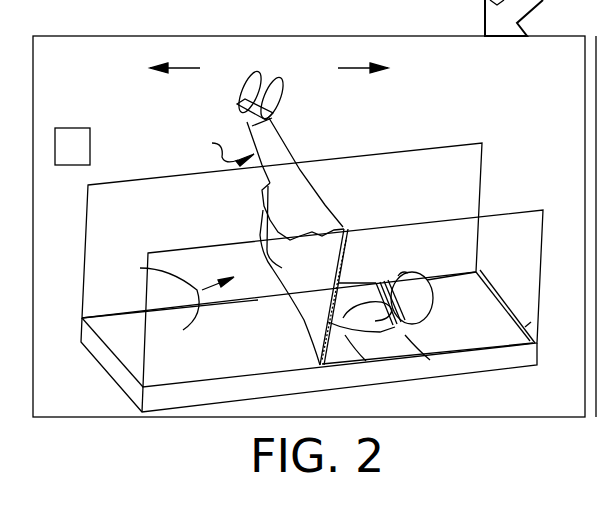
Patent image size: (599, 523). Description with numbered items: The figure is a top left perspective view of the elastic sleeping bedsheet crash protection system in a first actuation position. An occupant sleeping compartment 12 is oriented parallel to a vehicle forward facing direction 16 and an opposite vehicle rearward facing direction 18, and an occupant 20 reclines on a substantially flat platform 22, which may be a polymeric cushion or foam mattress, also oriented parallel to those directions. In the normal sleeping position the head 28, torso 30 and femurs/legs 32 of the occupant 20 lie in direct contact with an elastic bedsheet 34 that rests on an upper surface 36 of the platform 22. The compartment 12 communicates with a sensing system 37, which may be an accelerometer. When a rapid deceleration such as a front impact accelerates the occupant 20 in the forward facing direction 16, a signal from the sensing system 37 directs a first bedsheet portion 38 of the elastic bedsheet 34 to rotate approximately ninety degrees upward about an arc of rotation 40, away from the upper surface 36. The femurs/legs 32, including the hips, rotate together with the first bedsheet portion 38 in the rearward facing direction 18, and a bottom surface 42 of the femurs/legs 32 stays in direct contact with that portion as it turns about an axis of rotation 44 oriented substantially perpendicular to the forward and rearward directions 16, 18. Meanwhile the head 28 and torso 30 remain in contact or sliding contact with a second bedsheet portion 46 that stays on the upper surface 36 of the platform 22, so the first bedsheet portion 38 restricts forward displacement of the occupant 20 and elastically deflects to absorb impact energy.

The occupant sleeping compartment 12 is at (436, 116).
The vehicle forward facing direction 16 is at (185, 68).
The vehicle rearward facing direction 18 is at (348, 68).
The occupant 20 is at (382, 358).
The platform 22 is at (472, 363).
The head 28 is at (410, 272).
The torso 30 is at (352, 290).
The femurs/legs 32 is at (281, 145).
The elastic bedsheet 34 is at (487, 316).
The upper surface 36 is at (524, 330).
The sensing system 37 is at (60, 158).
The first bedsheet portion 38 is at (265, 240).
The arc of rotation 40 is at (327, 298).
The bottom surface 42 is at (219, 147).
The axis of rotation 44 is at (323, 368).
The second bedsheet portion 46 is at (410, 340).